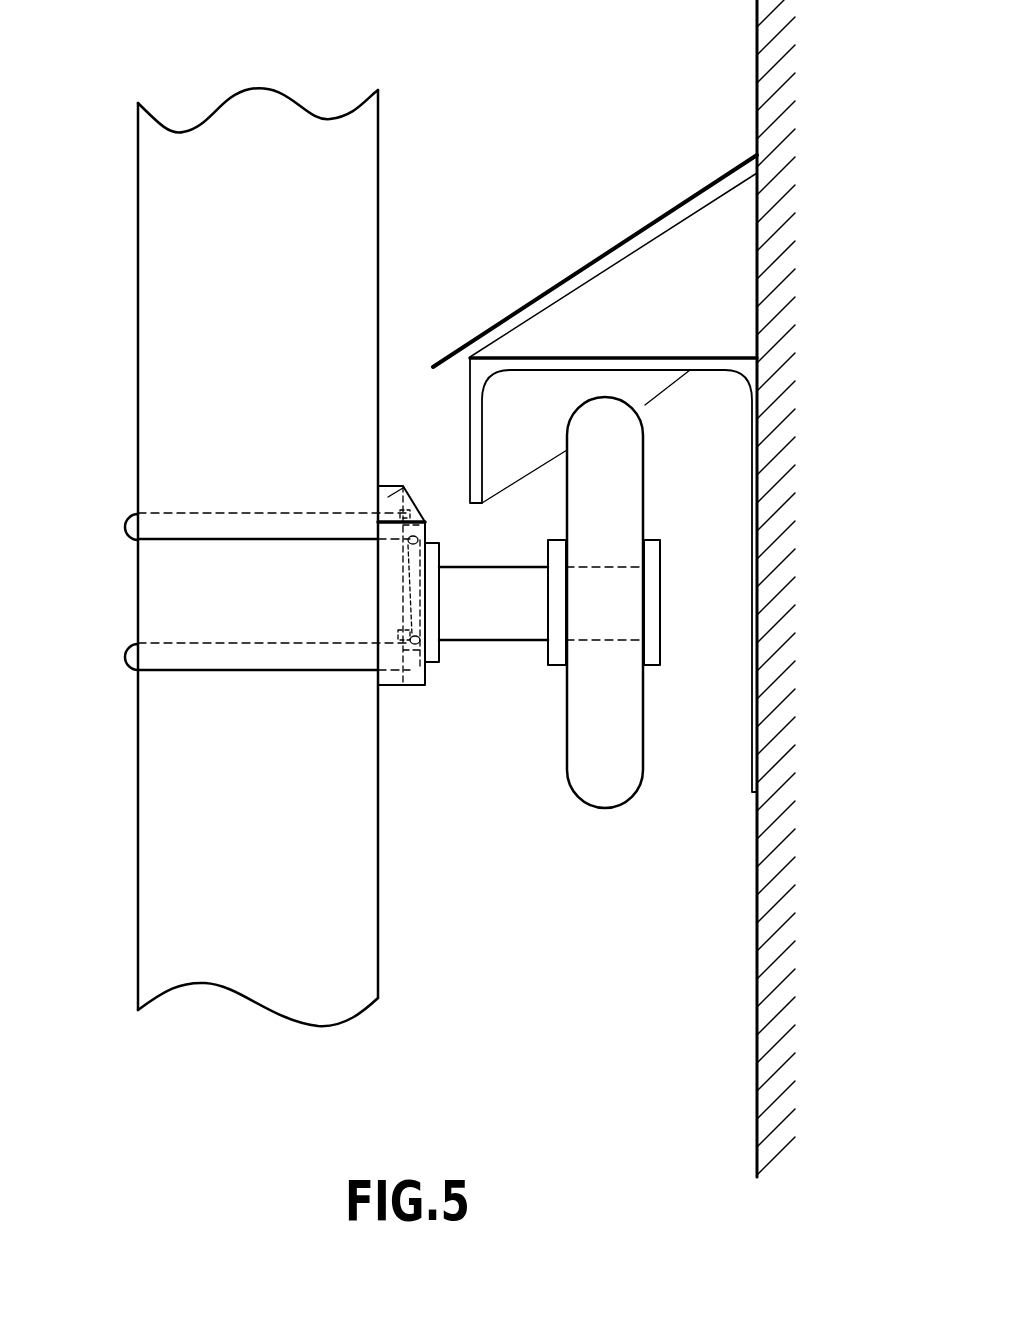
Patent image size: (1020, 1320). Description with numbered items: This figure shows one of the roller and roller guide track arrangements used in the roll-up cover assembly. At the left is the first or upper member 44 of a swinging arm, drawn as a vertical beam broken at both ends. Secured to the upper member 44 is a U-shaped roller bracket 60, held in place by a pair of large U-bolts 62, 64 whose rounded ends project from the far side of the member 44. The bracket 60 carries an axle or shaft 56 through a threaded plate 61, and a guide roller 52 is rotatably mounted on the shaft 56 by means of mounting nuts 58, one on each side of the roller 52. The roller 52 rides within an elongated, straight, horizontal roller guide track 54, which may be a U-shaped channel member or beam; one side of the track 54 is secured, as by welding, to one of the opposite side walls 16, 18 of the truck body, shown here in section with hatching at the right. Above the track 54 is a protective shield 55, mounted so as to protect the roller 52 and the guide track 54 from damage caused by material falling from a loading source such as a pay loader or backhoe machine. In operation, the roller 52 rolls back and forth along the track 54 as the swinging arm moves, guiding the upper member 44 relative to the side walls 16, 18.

The right-hand side wall 18 is at (730, 588).
The left-hand side wall 16 is at (757, 1052).
The first or upper member 44 is at (362, 867).
The guide roller 52 is at (610, 790).
The roller guide track 54 is at (600, 356).
The protective shield 55 is at (560, 280).
The axle or shaft 56 is at (482, 623).
The mounting nuts 58 is at (653, 547).
The U-shaped roller bracket 60 is at (390, 498).
The threaded plate 61 is at (439, 548).
The U-bolt 62 is at (122, 525).
The U-bolt 64 is at (118, 658).